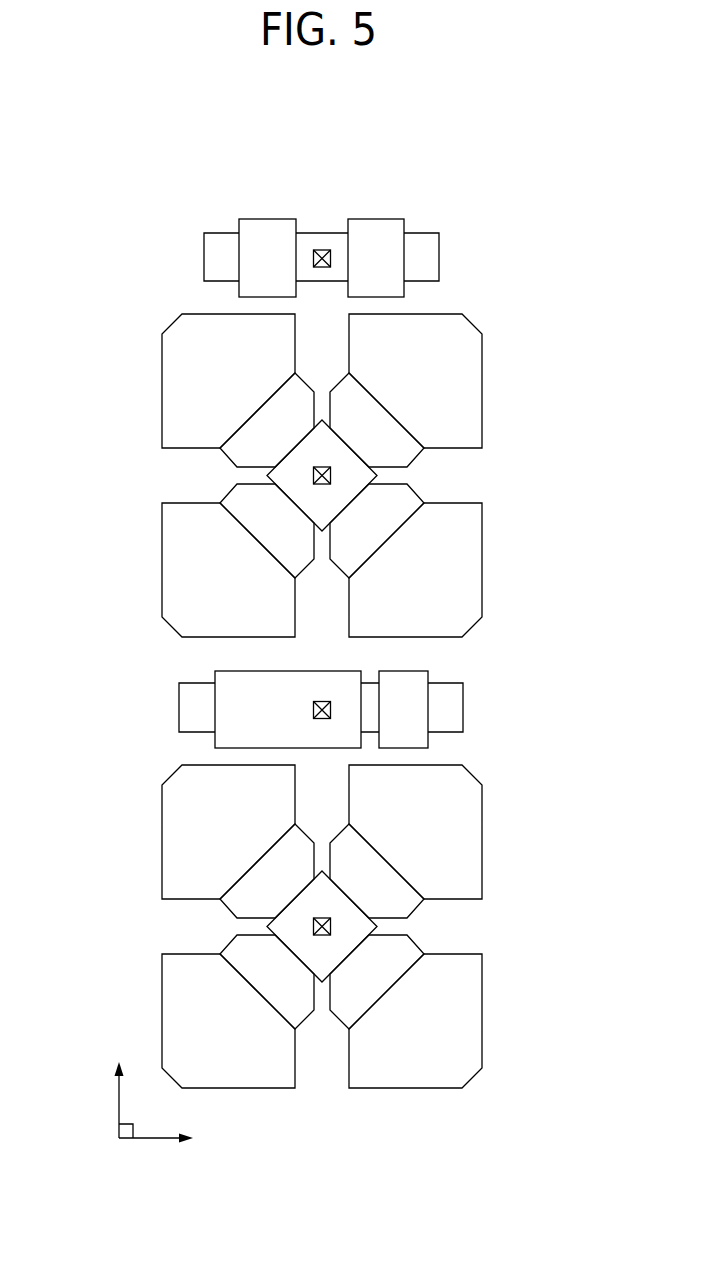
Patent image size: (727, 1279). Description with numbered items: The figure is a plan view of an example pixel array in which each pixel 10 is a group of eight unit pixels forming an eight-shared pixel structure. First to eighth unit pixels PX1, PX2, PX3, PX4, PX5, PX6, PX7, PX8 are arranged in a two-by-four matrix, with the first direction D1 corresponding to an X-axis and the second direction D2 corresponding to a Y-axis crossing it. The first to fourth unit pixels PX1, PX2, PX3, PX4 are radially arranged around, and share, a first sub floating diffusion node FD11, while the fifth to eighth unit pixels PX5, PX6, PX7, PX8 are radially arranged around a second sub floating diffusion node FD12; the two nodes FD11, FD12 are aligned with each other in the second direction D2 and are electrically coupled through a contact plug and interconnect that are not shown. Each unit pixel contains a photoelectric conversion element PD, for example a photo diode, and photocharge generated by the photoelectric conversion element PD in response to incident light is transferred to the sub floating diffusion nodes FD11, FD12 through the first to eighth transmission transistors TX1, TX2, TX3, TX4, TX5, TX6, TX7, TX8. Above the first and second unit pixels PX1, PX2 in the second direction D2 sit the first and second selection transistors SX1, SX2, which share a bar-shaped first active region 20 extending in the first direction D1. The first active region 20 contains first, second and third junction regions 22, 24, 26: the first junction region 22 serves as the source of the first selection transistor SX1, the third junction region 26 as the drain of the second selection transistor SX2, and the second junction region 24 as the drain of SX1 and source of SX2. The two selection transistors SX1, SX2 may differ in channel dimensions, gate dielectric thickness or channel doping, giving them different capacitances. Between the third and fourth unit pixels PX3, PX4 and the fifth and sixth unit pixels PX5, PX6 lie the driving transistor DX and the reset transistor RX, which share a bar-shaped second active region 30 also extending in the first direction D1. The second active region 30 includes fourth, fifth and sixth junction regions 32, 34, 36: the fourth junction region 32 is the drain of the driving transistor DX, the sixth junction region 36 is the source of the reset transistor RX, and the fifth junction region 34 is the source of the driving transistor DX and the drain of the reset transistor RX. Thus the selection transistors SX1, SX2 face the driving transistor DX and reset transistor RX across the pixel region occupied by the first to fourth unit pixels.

The pixel 10 is at (83, 144).
The first active region 20 is at (190, 254).
The first junction region 22 is at (222, 240).
The second junction region 24 is at (322, 232).
The third junction region 26 is at (423, 240).
The second active region 30 is at (486, 734).
The fourth junction region 32 is at (203, 687).
The fifth junction region 34 is at (367, 690).
The sixth junction region 36 is at (455, 692).
The photoelectric conversion element PD is at (322, 701).
The first unit pixel PX1 is at (214, 353).
The second unit pixel PX2 is at (462, 353).
The third unit pixel PX3 is at (214, 626).
The fourth unit pixel PX4 is at (462, 626).
The fifth unit pixel PX5 is at (214, 804).
The sixth unit pixel PX6 is at (462, 804).
The seventh unit pixel PX7 is at (214, 1077).
The eighth unit pixel PX8 is at (462, 1077).
The first transmission transistor TX1 is at (290, 439).
The second transmission transistor TX2 is at (382, 439).
The third transmission transistor TX3 is at (290, 538).
The fourth transmission transistor TX4 is at (382, 538).
The fifth transmission transistor TX5 is at (290, 890).
The sixth transmission transistor TX6 is at (382, 890).
The seventh transmission transistor TX7 is at (290, 989).
The eighth transmission transistor TX8 is at (382, 989).
The first sub floating diffusion node FD11 is at (362, 480).
The second sub floating diffusion node FD12 is at (362, 931).
The first selection transistor SX1 is at (282, 268).
The second selection transistor SX2 is at (391, 268).
The driving transistor DX is at (275, 722).
The reset transistor RX is at (415, 722).
The first direction D1 is at (172, 1138).
The second direction D2 is at (120, 1085).